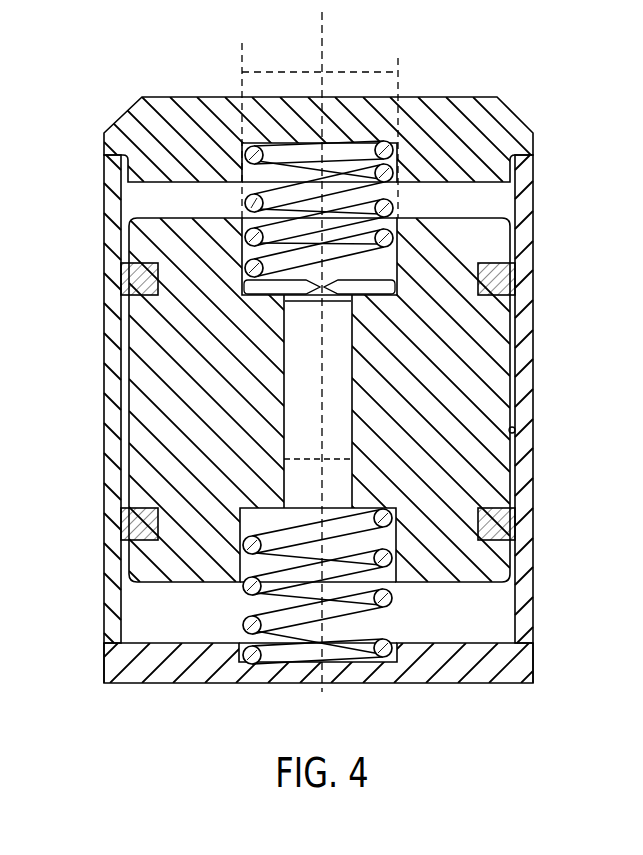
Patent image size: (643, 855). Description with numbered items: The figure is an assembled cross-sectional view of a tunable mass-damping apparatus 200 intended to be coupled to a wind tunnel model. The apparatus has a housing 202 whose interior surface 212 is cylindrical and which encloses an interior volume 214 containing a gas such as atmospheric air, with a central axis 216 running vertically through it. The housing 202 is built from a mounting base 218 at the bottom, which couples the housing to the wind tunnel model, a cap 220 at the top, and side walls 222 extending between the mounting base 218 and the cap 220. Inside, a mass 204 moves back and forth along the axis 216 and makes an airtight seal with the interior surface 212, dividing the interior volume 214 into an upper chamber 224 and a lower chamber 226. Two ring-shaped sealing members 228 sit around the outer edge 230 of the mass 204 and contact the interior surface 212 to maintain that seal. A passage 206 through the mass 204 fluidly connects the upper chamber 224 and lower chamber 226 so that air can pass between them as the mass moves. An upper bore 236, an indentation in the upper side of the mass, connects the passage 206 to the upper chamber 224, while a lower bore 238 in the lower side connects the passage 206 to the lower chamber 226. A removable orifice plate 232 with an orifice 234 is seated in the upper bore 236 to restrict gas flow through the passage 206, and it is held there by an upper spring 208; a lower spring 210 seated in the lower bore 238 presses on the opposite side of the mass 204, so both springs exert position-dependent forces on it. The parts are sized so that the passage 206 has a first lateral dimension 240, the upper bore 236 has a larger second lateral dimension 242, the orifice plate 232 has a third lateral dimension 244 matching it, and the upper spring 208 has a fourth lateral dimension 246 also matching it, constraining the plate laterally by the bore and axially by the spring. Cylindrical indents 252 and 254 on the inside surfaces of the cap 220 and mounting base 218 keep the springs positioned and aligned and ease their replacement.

The mass-damping apparatus 200 is at (112, 79).
The housing 202 is at (521, 188).
The mass 204 is at (500, 352).
The passage 206 is at (347, 414).
The upper spring 208 is at (362, 216).
The lower spring 210 is at (360, 604).
The interior surface 212 is at (515, 430).
The interior volume 214 is at (168, 623).
The axis 216 is at (322, 32).
The mounting base 218 is at (484, 686).
The cap 220 is at (468, 105).
The side walls 222 is at (107, 421).
The upper chamber 224 is at (135, 207).
The lower chamber 226 is at (508, 612).
The sealing members 228 is at (522, 282).
The outer edge 230 is at (511, 390).
The orifice plate 232 is at (283, 290).
The orifice 234 is at (298, 270).
The upper bore 236 is at (243, 253).
The lower bore 238 is at (246, 548).
The first lateral dimension 240 is at (292, 459).
The second lateral dimension 242 is at (267, 72).
The third lateral dimension 244 is at (300, 72).
The fourth lateral dimension 246 is at (373, 70).
The cylindrical indent 252 is at (393, 151).
The cylindrical indent 254 is at (393, 657).